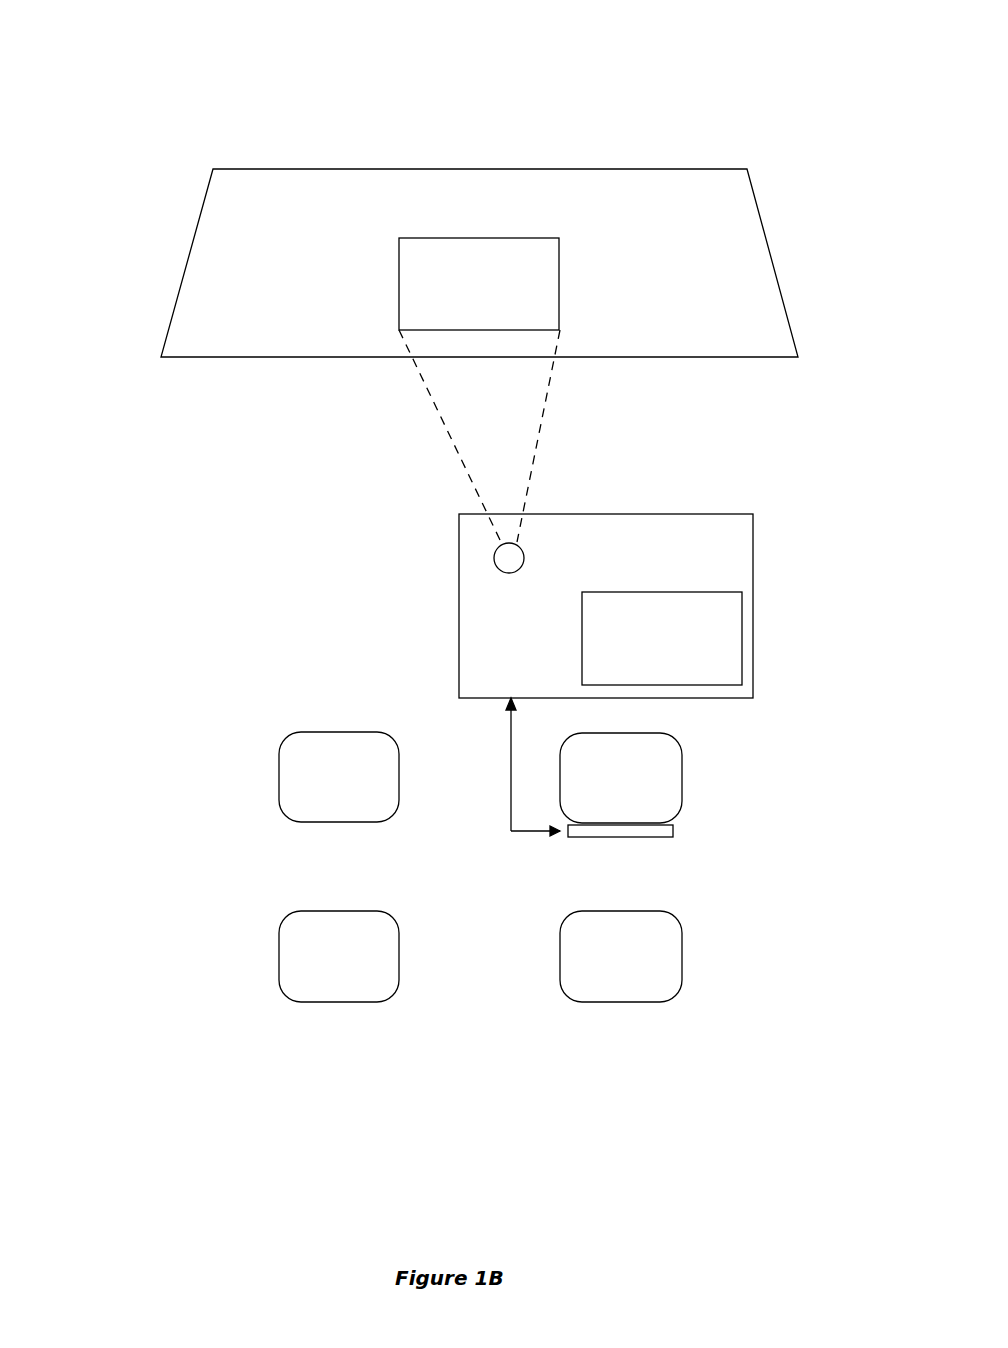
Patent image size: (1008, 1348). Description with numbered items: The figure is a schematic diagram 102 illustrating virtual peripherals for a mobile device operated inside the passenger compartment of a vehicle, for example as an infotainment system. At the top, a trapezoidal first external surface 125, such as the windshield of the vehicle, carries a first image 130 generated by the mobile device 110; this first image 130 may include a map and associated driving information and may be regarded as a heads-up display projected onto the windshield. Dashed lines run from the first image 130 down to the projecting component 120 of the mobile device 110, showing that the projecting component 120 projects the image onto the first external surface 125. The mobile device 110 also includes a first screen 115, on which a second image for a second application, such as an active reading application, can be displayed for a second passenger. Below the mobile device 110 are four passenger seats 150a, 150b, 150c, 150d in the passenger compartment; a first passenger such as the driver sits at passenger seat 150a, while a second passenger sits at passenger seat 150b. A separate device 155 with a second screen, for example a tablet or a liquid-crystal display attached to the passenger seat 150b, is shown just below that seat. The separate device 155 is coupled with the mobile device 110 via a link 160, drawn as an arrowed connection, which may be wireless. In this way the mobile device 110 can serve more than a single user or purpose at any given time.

The schematic diagram 102 is at (106, 73).
The first external surface 125 is at (688, 169).
The first image 130 is at (559, 272).
The mobile device 110 is at (645, 514).
The projecting component 120 is at (524, 560).
The first screen 115 is at (682, 592).
The passenger seat 150a is at (279, 772).
The passenger seat 150b is at (682, 770).
The passenger seat 150c is at (279, 955).
The passenger seat 150d is at (682, 952).
The separate device 155 is at (620, 838).
The link 160 is at (511, 760).